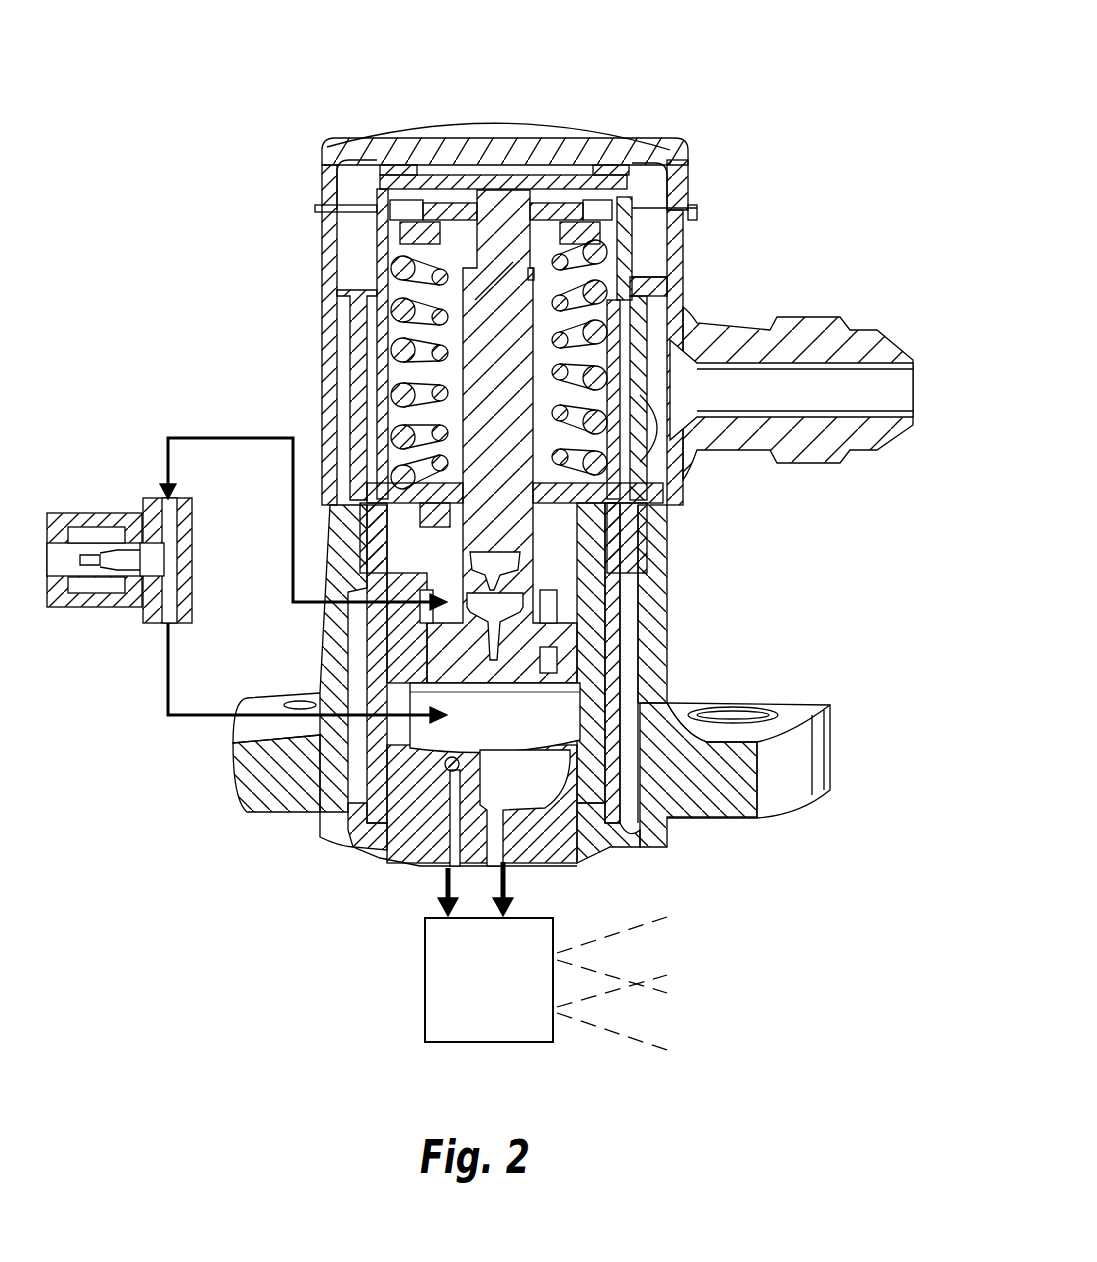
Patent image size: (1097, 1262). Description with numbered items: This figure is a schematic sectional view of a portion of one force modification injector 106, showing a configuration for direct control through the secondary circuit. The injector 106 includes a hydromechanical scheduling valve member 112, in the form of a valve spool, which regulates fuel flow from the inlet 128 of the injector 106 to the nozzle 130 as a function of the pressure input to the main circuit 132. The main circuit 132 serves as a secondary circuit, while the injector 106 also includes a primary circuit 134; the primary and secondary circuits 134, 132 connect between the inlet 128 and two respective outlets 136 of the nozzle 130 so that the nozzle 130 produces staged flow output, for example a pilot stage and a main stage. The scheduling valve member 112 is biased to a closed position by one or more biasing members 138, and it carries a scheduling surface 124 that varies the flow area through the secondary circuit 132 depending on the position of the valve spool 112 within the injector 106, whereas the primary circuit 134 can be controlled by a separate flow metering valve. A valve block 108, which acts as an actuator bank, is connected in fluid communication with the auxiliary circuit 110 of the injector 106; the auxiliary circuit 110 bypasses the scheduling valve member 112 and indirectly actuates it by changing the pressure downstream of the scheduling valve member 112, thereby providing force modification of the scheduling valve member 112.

The force modification injector 106 is at (595, 465).
The valve block 108 is at (89, 498).
The auxiliary circuit 110 is at (213, 437).
The scheduling valve member 112 is at (512, 222).
The scheduling surface 124 is at (549, 662).
The inlet 128 is at (921, 390).
The nozzle 130 is at (425, 1013).
The main circuit 132 is at (517, 850).
The primary circuit 134 is at (450, 828).
The outlets 136 is at (676, 944).
The biasing members 138 is at (533, 276).